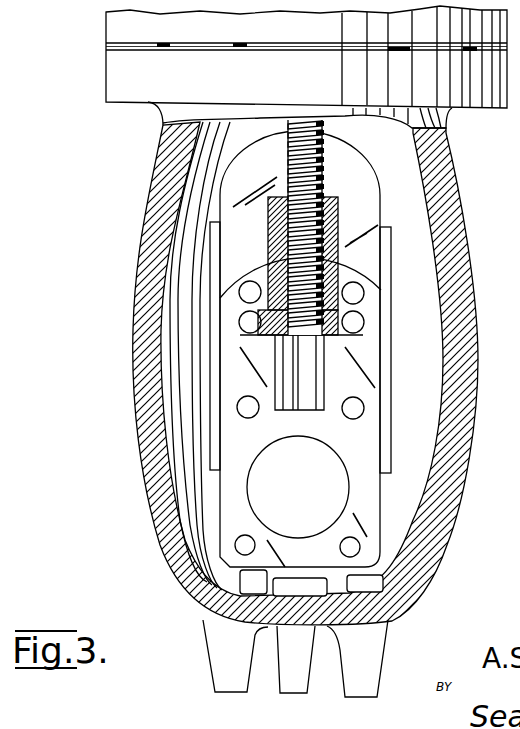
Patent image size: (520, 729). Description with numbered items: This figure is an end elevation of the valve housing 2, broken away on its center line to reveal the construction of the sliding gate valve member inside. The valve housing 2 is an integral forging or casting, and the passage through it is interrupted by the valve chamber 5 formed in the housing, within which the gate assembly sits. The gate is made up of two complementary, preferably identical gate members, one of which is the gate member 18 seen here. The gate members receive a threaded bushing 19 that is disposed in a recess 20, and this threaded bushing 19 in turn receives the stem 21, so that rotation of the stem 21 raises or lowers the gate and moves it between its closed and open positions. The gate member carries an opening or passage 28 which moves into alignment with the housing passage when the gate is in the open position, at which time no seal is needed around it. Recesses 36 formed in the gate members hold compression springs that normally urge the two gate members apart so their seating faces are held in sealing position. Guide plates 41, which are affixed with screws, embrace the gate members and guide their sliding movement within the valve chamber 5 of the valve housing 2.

The valve housing 2 is at (460, 449).
The valve chamber 5 is at (425, 422).
The gate member 18 is at (364, 500).
The threaded bushing 19 is at (340, 213).
The recess 20 is at (364, 322).
The stem 21 is at (321, 162).
The opening or passage 28 is at (253, 488).
The recesses 36 is at (345, 416).
The guide plates 41 is at (389, 393).